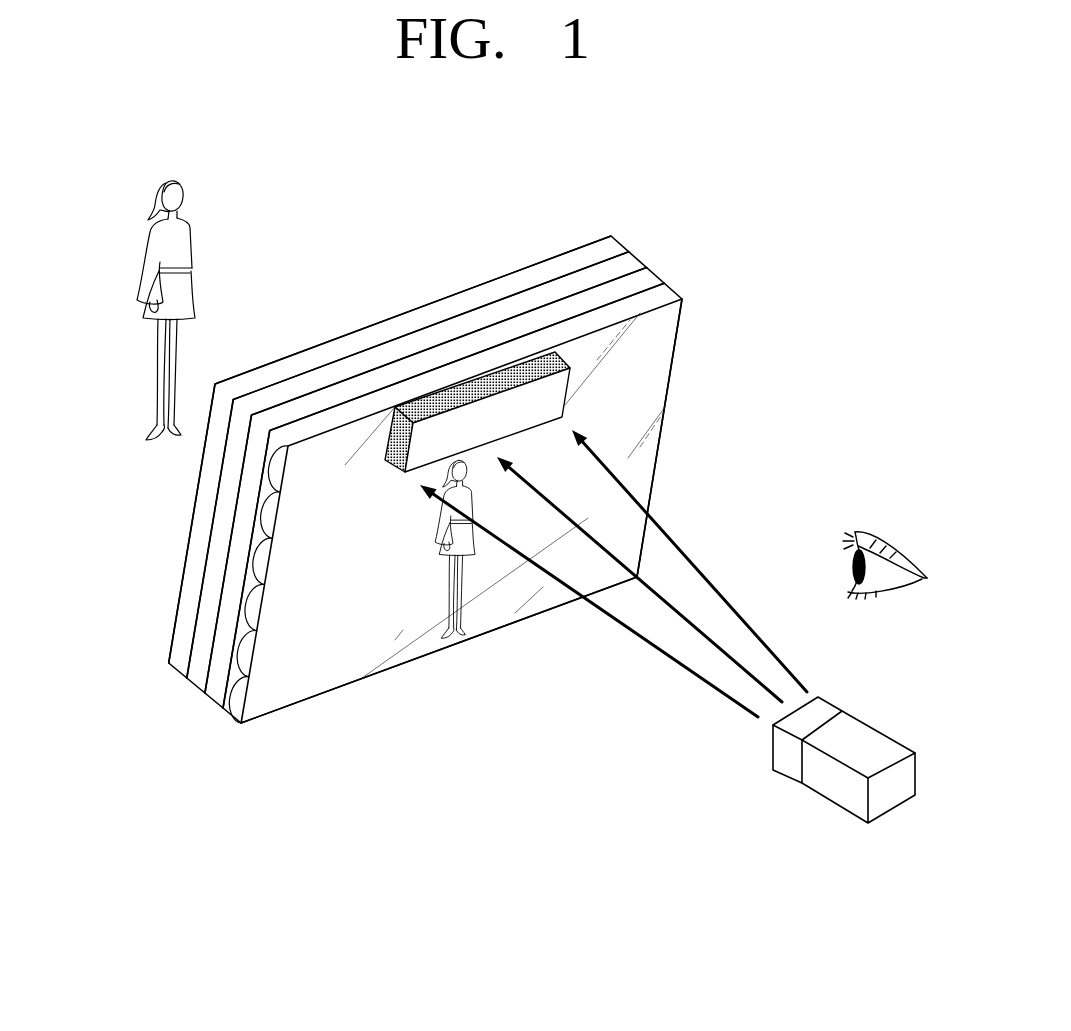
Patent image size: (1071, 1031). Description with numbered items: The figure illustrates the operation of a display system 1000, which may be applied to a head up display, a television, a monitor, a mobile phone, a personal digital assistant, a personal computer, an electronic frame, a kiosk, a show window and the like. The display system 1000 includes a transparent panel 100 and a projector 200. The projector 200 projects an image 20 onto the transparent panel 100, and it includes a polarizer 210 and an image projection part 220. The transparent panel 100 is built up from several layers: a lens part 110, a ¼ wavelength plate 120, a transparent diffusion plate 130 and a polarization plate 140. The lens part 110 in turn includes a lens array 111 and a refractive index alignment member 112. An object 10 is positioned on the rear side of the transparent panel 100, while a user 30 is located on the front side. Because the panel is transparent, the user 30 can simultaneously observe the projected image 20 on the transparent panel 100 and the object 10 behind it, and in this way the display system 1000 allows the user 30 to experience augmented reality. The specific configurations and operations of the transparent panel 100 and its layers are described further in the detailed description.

The object 10 is at (170, 178).
The image 20 is at (567, 362).
The user 30 is at (887, 537).
The transparent panel 100 is at (682, 328).
The lens part 110 is at (190, 804).
The lens array 111 is at (230, 690).
The refractive index alignment member 112 is at (246, 727).
The ¼ wavelength plate 120 is at (220, 672).
The transparent diffusion plate 130 is at (200, 658).
The polarization plate 140 is at (178, 645).
The projector 200 is at (727, 827).
The polarizer 210 is at (790, 764).
The image projection part 220 is at (860, 803).
The display system 1000 is at (145, 921).